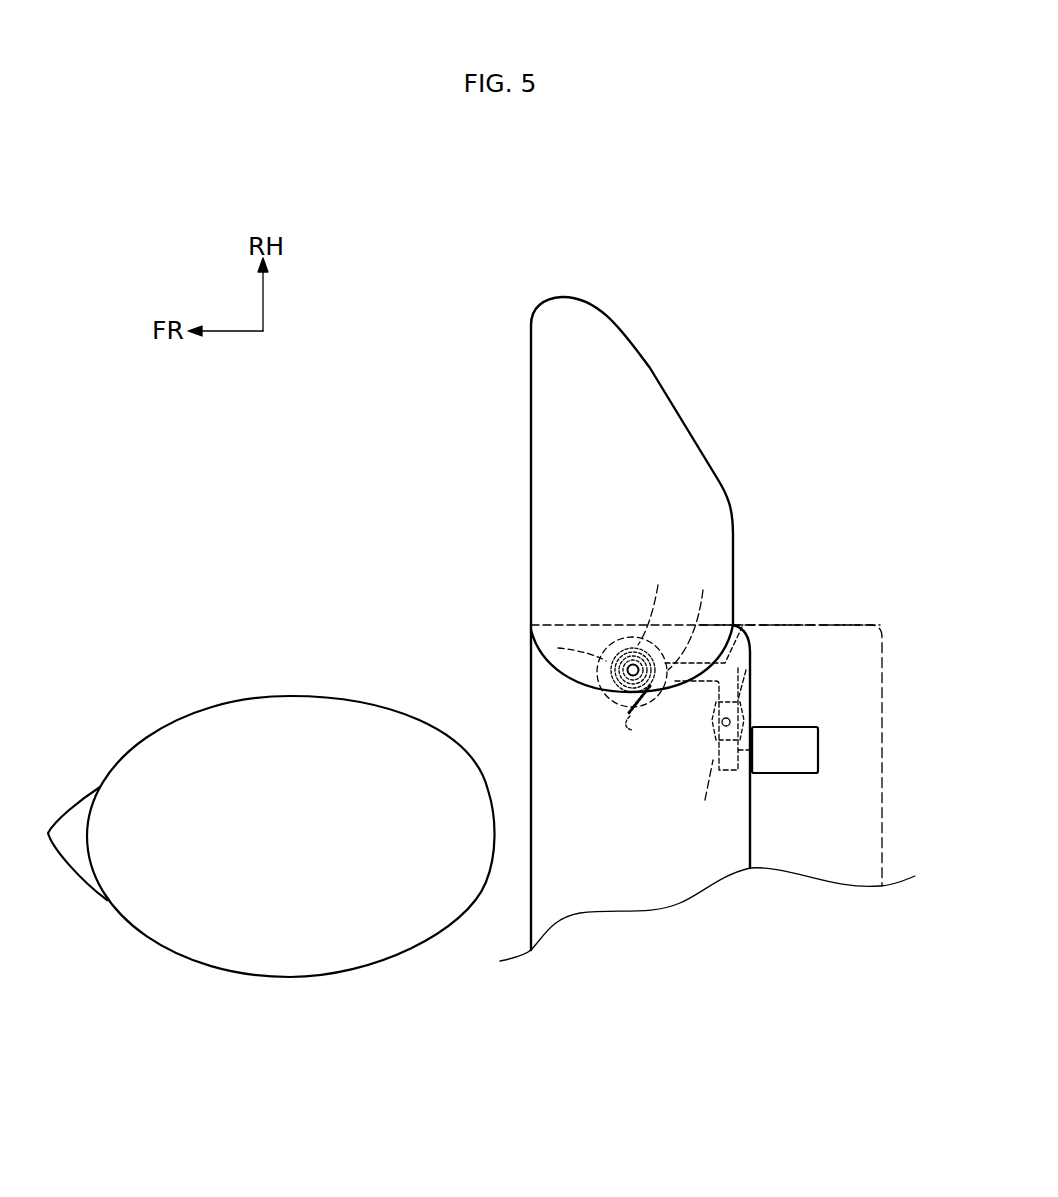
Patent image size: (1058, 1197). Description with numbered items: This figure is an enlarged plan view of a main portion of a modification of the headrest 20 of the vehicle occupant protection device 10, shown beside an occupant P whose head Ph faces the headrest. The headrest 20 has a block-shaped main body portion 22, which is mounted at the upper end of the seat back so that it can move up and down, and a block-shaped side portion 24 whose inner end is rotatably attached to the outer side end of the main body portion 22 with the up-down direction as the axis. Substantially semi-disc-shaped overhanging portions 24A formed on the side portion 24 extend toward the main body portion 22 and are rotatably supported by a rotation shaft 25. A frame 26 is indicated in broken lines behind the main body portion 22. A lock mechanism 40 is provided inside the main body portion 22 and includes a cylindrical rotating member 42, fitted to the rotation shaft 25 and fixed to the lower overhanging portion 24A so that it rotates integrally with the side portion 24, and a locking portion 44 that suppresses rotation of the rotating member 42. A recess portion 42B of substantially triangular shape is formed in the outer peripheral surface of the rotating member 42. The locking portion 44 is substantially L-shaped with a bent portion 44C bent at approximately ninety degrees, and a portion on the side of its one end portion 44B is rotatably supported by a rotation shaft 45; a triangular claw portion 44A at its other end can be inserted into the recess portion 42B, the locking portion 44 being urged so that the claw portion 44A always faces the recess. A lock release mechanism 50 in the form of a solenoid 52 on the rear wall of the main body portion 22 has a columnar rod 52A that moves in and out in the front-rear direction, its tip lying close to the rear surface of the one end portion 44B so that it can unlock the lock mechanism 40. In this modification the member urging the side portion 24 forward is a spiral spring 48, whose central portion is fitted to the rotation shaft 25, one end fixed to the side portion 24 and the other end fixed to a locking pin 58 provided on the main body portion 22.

The headrest 10 is at (783, 378).
The headrest 20 is at (655, 366).
The main body portion 22 is at (528, 916).
The side portion 24 is at (572, 318).
The overhanging portion 24A is at (576, 679).
The rotation shaft 25 is at (616, 662).
The headrest frame 26 is at (882, 660).
The lock mechanism 40 is at (703, 692).
The rotating member 42 is at (634, 645).
The recess portion 42B is at (658, 585).
The locking portion 44 is at (729, 664).
The claw portion 44A is at (703, 590).
The one end portion 44B is at (705, 800).
The bent portion 44C is at (746, 670).
The rotation shaft 45 is at (716, 738).
The spiral spring 48 is at (558, 648).
The lock release mechanism 50 is at (796, 776).
The solenoid 52 is at (807, 748).
The rod 52A is at (732, 778).
The locking pin 58 is at (634, 732).
The occupant P is at (271, 790).
The occupant head Ph is at (335, 717).